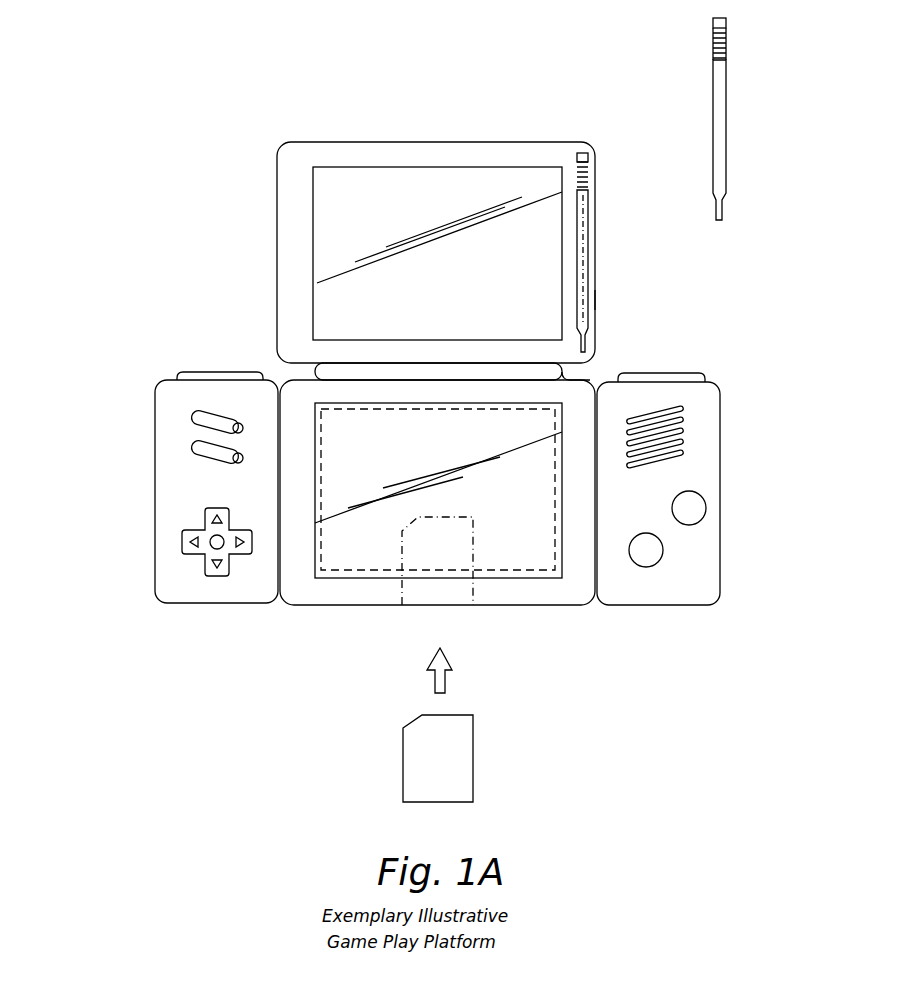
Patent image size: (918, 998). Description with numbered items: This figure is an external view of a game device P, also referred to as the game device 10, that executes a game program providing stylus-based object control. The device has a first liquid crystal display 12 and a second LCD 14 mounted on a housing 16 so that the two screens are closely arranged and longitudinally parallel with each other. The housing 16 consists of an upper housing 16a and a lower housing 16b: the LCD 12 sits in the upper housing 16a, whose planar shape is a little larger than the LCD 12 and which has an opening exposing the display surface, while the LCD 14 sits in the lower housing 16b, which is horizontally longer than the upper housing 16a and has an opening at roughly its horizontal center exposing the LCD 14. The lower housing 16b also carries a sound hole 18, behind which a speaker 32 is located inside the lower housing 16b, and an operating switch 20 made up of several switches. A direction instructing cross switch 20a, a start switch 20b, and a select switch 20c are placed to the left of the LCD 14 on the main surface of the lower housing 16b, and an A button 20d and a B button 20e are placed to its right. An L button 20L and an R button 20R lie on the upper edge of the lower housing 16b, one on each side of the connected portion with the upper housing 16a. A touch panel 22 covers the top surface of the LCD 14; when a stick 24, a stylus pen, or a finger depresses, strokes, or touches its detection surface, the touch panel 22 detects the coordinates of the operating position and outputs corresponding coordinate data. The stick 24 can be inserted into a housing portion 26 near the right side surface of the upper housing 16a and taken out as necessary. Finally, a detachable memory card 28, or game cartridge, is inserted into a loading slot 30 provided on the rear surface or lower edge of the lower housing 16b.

The game device P is at (248, 126).
The game device 10 is at (358, 36).
The first liquid crystal display (LCD) 12 is at (333, 223).
The second LCD 14 is at (537, 603).
The housing 16 is at (692, 277).
The upper housing 16a is at (595, 298).
The lower housing 16b is at (582, 382).
The sound hole 18 is at (687, 432).
The speaker 32 is at (654, 437).
The operating switch 20 is at (173, 397).
The action switch (L button) 20L is at (220, 372).
The action switch (R button) 20R is at (672, 373).
The direction instructing switch (cross switch) 20a is at (182, 538).
The start switch 20b is at (192, 422).
The select switch 20c is at (212, 458).
The action switch (A button) 20d is at (706, 505).
The action switch (B button) 20e is at (663, 548).
The touch panel 22 is at (340, 542).
The stick 24 is at (724, 111).
The housing portion (housing slot) 26 is at (583, 208).
The memory card 28 is at (468, 750).
The loading slot 30 is at (443, 605).